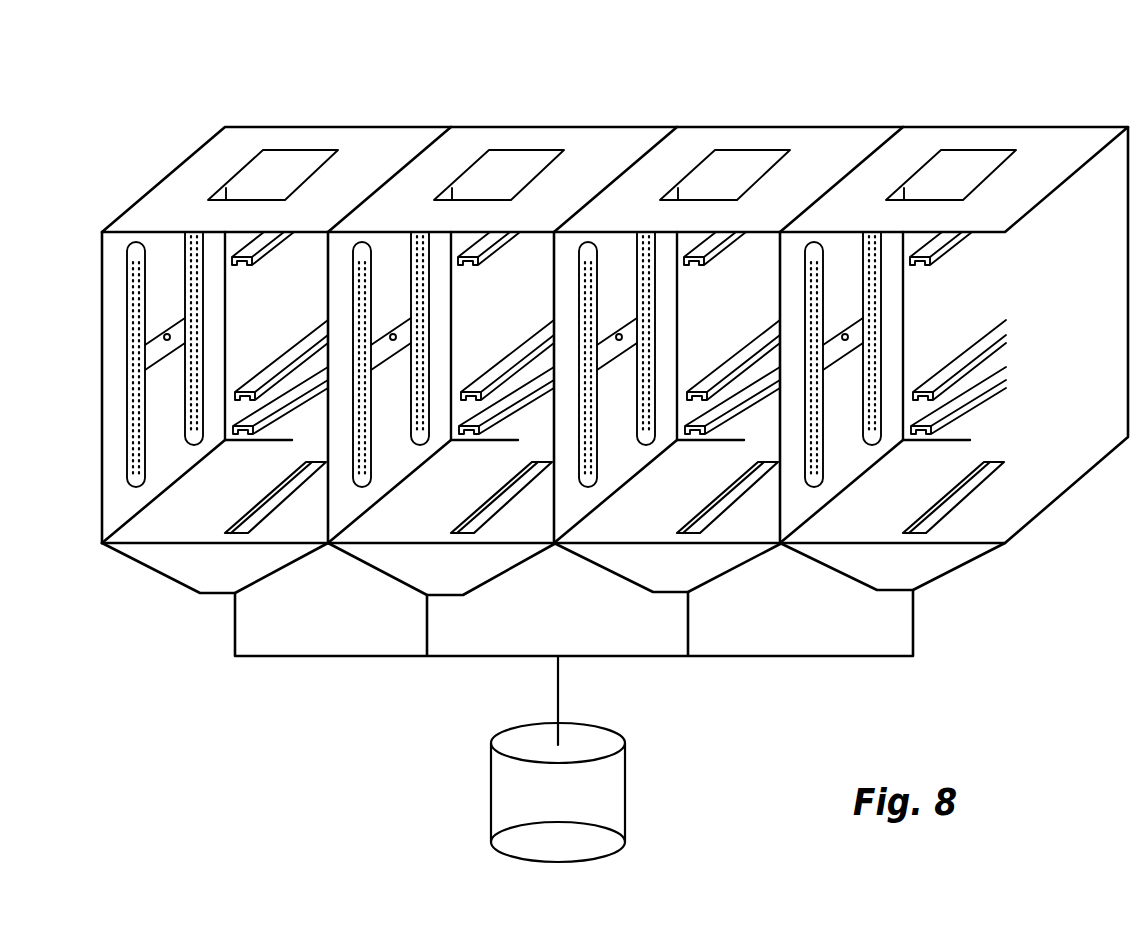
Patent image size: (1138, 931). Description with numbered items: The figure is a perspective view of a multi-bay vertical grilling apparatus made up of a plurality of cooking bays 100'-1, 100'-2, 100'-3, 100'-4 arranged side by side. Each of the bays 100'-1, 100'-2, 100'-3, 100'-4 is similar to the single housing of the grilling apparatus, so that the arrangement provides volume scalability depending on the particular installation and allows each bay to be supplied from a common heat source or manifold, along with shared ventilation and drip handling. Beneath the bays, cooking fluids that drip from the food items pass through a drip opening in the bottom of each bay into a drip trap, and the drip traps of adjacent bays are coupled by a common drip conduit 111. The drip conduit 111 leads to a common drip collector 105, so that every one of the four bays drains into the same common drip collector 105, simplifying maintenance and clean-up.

The cooking bay 100'-1 is at (220, 290).
The cooking bay 100'-2 is at (446, 308).
The cooking bay 100'-3 is at (672, 299).
The cooking bay 100'-4 is at (898, 293).
The drip conduit 111 is at (467, 657).
The common drip collector 105 is at (626, 783).